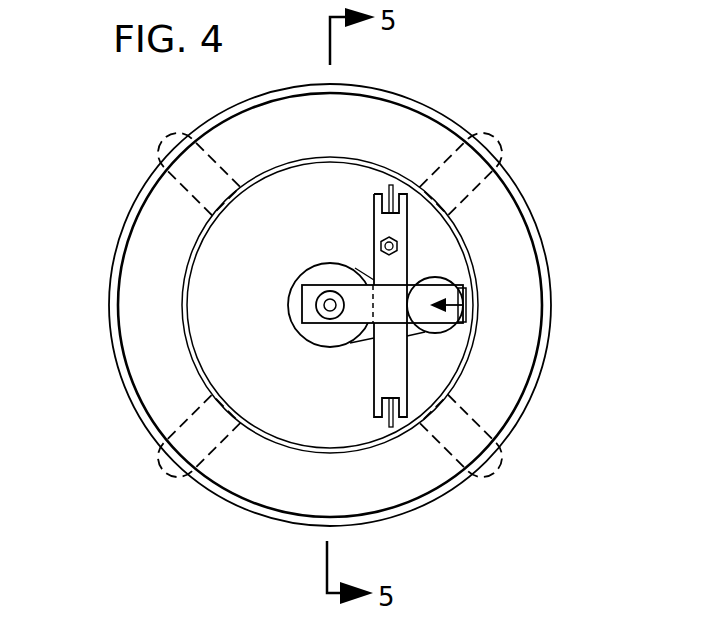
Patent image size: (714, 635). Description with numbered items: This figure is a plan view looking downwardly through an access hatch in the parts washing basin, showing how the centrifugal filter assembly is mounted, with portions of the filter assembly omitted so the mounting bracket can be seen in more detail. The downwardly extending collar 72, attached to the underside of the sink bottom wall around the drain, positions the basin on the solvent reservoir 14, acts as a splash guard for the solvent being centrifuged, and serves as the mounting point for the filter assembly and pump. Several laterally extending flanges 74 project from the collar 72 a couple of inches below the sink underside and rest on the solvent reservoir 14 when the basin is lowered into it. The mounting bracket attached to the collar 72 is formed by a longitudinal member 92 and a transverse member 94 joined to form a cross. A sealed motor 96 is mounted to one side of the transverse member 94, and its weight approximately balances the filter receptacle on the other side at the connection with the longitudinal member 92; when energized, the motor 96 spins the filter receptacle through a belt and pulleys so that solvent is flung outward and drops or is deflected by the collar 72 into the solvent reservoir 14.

The solvent reservoir 14 is at (112, 330).
The collar 72 is at (182, 300).
The flanges 74 is at (182, 183).
The longitudinal member 92 is at (408, 268).
The transverse member 94 is at (343, 333).
The sealed motor 96 is at (466, 309).